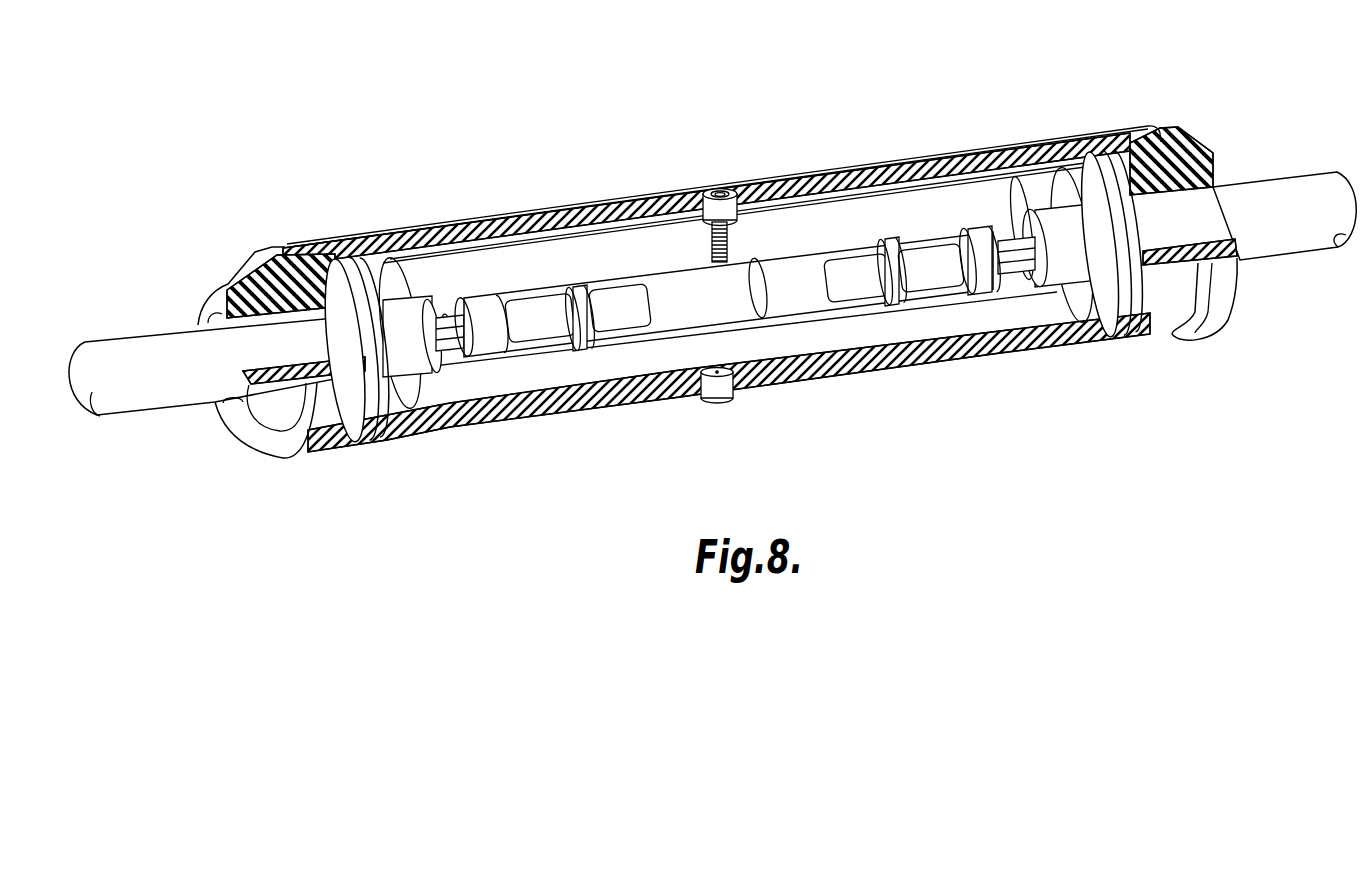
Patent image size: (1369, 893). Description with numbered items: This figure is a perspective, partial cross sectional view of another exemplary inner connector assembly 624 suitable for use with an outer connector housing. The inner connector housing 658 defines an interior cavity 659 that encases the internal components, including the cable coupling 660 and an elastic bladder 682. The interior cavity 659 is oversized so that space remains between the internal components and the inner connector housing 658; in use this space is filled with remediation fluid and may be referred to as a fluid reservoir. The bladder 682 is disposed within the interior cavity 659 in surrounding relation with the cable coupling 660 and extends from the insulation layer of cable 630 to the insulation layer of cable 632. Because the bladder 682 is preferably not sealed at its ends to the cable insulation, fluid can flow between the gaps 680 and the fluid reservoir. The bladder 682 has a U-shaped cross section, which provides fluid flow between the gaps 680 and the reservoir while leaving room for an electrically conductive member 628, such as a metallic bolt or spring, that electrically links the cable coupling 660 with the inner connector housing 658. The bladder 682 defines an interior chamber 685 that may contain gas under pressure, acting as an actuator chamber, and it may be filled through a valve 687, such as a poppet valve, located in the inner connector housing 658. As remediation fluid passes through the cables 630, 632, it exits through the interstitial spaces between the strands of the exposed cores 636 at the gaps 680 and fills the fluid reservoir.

The inner connector assembly 624 is at (240, 210).
The electrically conductive member 628 is at (733, 223).
The cable 630 is at (160, 348).
The cable 632 is at (1262, 190).
The exposed core 636 is at (450, 315).
The inner connector housing 658 is at (1120, 127).
The interior cavity 659 is at (1067, 313).
The cable coupling 660 is at (662, 290).
The gap 680 is at (453, 352).
The elastic bladder 682 is at (377, 270).
The interior chamber 685 is at (462, 272).
The valve 687 is at (720, 406).